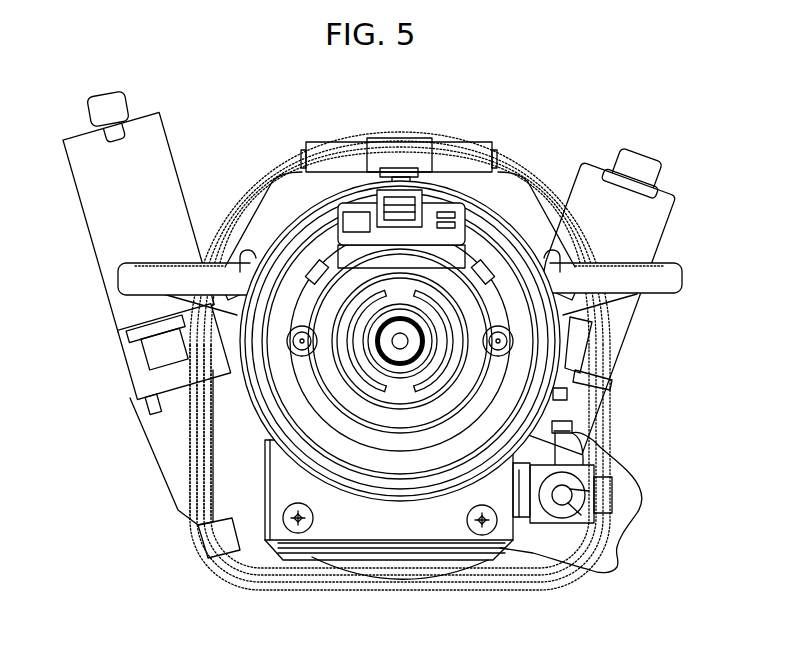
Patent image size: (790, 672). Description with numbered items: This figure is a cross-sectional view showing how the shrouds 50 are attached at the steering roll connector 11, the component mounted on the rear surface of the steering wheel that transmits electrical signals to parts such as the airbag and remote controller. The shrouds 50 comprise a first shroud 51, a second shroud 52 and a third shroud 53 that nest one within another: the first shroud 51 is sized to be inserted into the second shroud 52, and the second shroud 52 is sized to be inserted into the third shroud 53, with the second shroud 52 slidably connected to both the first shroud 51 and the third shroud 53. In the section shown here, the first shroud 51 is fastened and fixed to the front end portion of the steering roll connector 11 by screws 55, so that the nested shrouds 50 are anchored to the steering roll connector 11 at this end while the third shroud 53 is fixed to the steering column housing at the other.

The steering roll connector 11 is at (347, 505).
The shrouds 50 is at (88, 413).
The first shroud 51 is at (208, 508).
The second shroud 52 is at (202, 463).
The third shroud 53 is at (193, 425).
The screws 55 is at (481, 535).